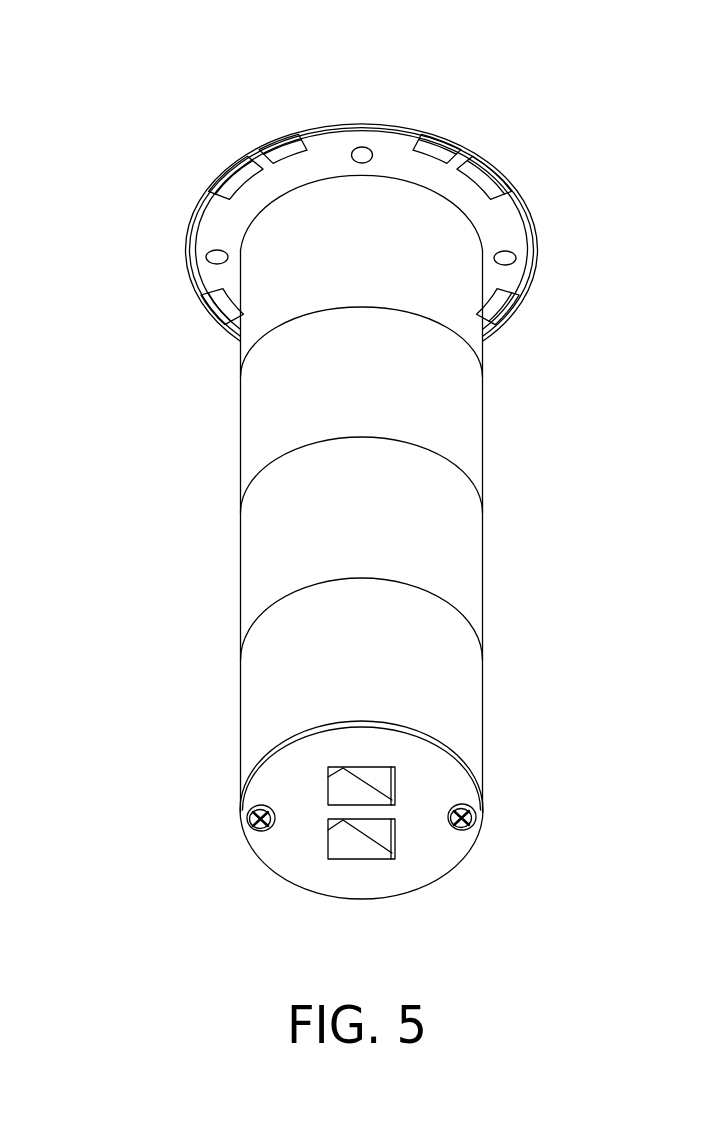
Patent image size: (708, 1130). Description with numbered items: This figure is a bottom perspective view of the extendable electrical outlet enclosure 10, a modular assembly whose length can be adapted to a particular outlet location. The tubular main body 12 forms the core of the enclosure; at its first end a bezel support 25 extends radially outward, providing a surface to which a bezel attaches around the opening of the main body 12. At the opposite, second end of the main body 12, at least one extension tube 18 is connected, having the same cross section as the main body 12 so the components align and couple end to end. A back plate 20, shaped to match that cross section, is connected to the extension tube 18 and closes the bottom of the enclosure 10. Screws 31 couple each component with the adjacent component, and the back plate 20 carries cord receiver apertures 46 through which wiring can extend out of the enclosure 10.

The extendable electrical outlet enclosure 10 is at (88, 100).
The main body 12 is at (482, 377).
The extension tube 18 is at (267, 542).
The back plate 20 is at (445, 852).
The bezel support 25 is at (512, 232).
The screws 31 is at (450, 830).
The cord receiver aperture 46 is at (338, 840).